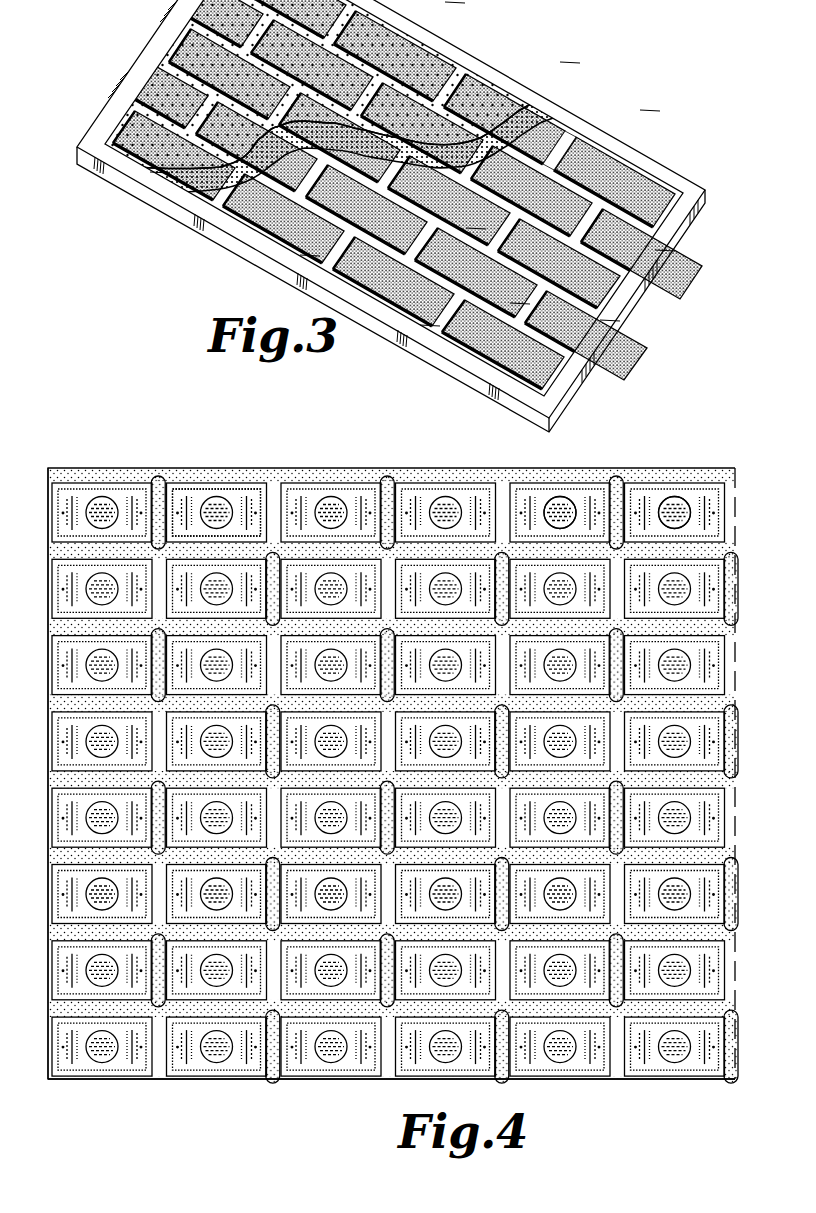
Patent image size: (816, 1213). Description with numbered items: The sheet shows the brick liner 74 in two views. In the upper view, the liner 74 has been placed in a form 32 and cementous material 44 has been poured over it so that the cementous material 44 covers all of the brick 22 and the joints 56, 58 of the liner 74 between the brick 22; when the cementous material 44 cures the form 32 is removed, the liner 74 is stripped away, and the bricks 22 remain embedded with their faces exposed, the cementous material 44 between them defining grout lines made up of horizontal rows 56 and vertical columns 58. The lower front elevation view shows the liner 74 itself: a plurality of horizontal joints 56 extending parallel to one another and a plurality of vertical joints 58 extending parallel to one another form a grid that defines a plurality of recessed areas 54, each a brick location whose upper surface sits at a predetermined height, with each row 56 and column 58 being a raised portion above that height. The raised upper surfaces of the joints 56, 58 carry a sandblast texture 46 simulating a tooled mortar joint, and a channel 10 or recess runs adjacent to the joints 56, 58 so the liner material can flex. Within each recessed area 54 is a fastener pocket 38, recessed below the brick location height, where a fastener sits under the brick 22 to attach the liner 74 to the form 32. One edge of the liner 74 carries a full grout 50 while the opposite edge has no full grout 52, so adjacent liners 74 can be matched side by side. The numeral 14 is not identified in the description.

In FIG. 4, the channel 10 is at (283, 518).
In FIG. 4, the base layer 14 is at (387, 1063).
In FIG. 3, the brick 22 is at (590, 318).
In FIG. 3, the form 32 is at (686, 194).
In FIG. 4, the fastener pocket 38 is at (673, 498).
In FIG. 3, the cementous material 44 is at (380, 62).
In FIG. 4, the sandblast texture 46 is at (478, 468).
In FIG. 4, the full grout 50 is at (730, 582).
In FIG. 4, the no full grout 52 is at (45, 1053).
In FIG. 4, the recessed area 54 is at (247, 500).
In FIG. 3, the horizontal joint 56 is at (558, 378).
In FIG. 4, the horizontal joint 56 is at (205, 552).
In FIG. 3, the vertical joint 58 is at (580, 166).
In FIG. 4, the vertical joint 58 is at (733, 1073).
In FIG. 3, the liner 74 is at (528, 200).
In FIG. 4, the liner 74 is at (131, 447).